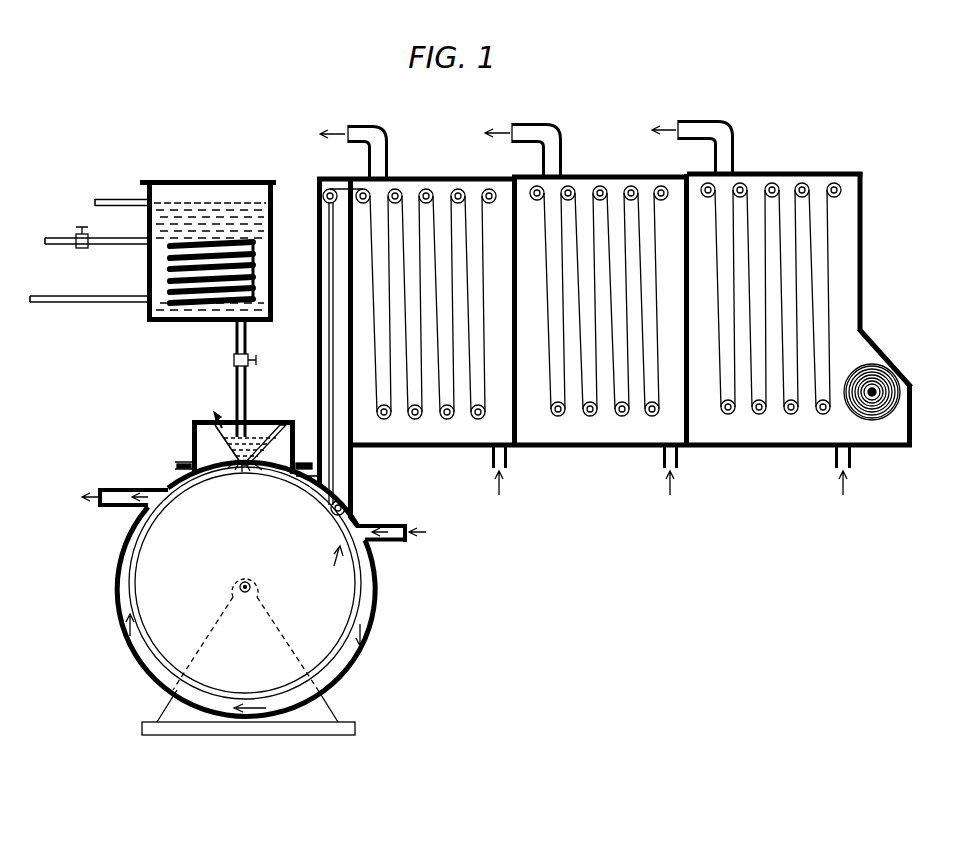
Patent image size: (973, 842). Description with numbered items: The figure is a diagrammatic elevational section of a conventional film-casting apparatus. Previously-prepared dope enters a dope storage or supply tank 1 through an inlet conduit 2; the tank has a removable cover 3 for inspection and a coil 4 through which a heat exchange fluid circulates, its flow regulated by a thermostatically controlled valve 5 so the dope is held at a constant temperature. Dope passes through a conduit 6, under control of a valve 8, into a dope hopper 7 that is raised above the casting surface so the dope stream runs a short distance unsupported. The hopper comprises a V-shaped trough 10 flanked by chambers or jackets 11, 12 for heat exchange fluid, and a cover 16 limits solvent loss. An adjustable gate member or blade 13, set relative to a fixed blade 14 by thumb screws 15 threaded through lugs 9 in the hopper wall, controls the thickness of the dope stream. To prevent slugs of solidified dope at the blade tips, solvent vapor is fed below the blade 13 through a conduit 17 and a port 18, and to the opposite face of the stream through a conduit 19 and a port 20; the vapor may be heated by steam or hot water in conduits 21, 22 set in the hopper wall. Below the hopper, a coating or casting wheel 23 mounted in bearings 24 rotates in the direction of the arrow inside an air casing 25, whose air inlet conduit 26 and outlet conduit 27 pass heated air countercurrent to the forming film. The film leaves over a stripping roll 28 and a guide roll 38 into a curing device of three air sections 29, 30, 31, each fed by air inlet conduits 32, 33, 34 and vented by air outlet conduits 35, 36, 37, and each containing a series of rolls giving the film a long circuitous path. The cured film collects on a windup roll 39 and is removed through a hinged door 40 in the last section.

The dope storage or supply tank 1 is at (273, 248).
The inlet conduit 2 is at (114, 199).
The removable cover 3 is at (200, 180).
The coil 4 is at (167, 262).
The thermostatically controlled valve 5 is at (78, 232).
The conduit 6 is at (236, 333).
The dope hopper 7 is at (192, 430).
The valve 8 is at (257, 357).
The lugs 9 is at (235, 428).
The V-shaped trough 10 is at (263, 442).
The chamber or jacket 11 is at (228, 468).
The chamber or jacket 12 is at (264, 470).
The adjustable gate member or blade 13 is at (235, 470).
The fixed blade 14 is at (275, 432).
The thumb screws 15 is at (216, 412).
The cover 16 is at (251, 432).
The conduit 17 is at (183, 460).
The port 18 is at (242, 472).
The conduit 19 is at (321, 458).
The port 20 is at (250, 471).
The conduit 21 is at (176, 466).
The conduit 22 is at (322, 479).
The coating or casting wheel 23 is at (133, 598).
The bearings 24 is at (240, 589).
The air casing 25 is at (360, 648).
The air inlet conduit 26 is at (395, 541).
The outlet conduit 27 is at (115, 505).
The stripping roll 28 is at (346, 510).
The air section 29 is at (445, 180).
The air section 30 is at (620, 178).
The air section 31 is at (777, 176).
The air inlet conduit 32 is at (508, 460).
The air inlet conduit 33 is at (679, 458).
The air inlet conduit 34 is at (852, 458).
The air outlet conduit 35 is at (383, 127).
The air outlet conduit 36 is at (545, 125).
The air outlet conduit 37 is at (718, 122).
The guide roll 38 is at (324, 190).
The windup roll 39 is at (899, 385).
The hinged door 40 is at (885, 352).